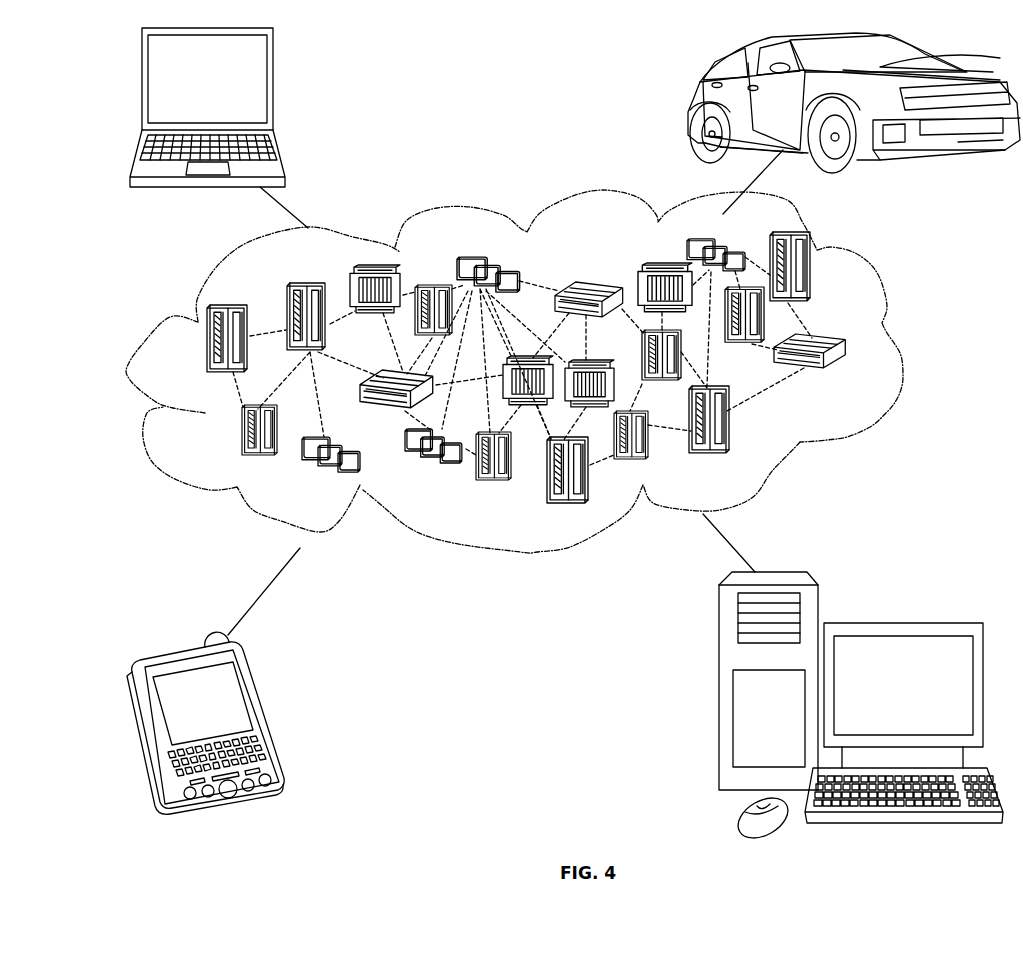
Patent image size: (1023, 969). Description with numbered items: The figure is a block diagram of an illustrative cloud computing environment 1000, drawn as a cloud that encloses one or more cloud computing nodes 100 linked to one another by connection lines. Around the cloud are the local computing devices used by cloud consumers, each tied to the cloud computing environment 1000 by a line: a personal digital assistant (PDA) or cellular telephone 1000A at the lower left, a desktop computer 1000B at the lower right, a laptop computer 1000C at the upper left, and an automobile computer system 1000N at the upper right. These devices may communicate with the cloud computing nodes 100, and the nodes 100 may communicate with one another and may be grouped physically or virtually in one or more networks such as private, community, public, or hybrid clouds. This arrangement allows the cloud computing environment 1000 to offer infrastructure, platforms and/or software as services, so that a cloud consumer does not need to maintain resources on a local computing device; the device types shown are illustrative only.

The laptop computer 1000C is at (277, 88).
The automobile computer system 1000N is at (690, 102).
The cloud computing environment 1000 is at (900, 343).
The cloud computing nodes 100 is at (845, 378).
The personal digital assistant (PDA) or cellular telephone 1000A is at (268, 712).
The desktop computer 1000B is at (900, 623).